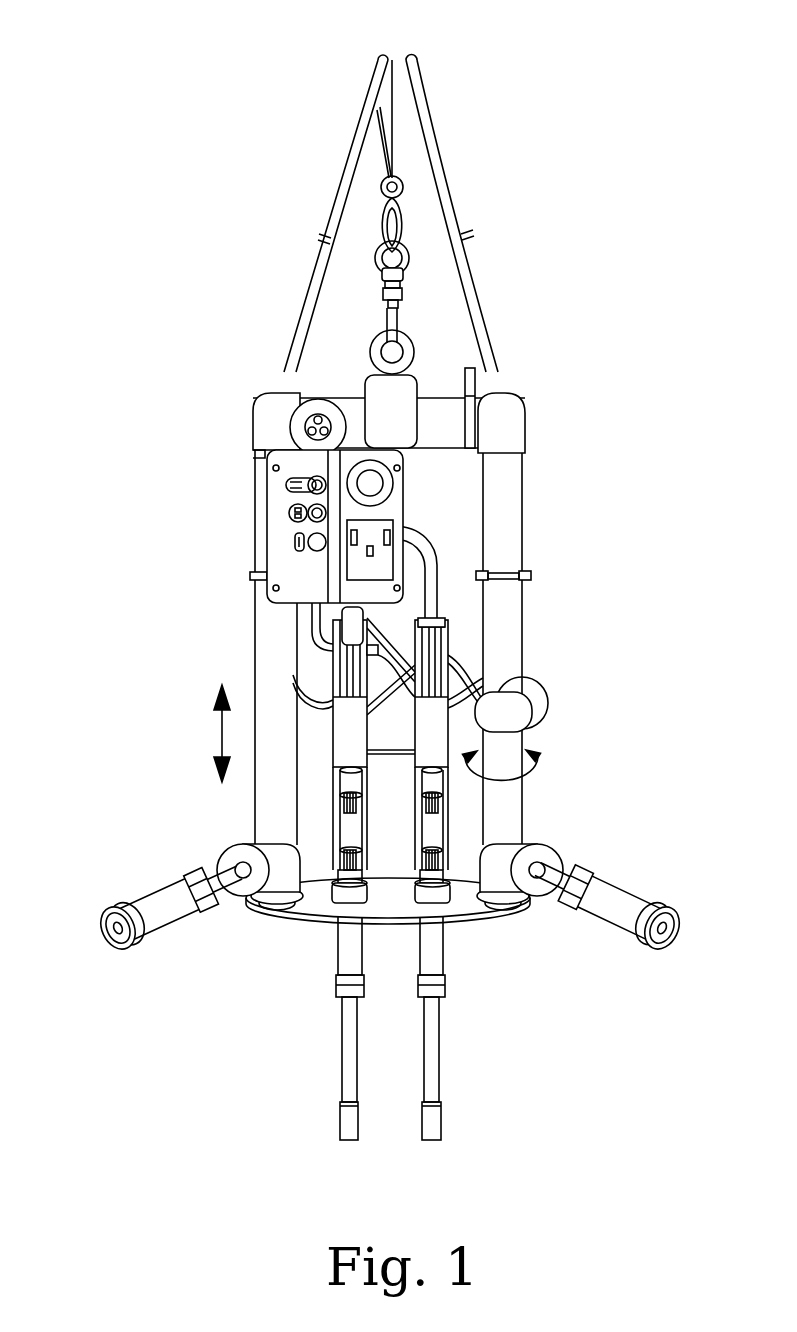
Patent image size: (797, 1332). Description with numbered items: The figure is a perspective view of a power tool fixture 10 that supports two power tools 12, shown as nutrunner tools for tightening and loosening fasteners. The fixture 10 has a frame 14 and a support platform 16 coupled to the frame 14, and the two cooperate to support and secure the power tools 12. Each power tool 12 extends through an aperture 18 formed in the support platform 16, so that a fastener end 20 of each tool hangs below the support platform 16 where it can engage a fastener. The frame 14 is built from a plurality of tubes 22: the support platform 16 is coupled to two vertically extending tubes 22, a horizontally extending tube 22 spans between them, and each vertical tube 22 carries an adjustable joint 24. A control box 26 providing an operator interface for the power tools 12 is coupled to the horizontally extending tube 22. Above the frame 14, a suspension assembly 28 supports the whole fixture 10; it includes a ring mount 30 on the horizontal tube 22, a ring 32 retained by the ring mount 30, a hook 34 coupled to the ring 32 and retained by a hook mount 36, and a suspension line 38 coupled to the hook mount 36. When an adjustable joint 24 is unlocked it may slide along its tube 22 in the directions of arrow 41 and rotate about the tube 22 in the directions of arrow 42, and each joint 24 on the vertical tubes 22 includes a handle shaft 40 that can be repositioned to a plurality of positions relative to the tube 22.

The power tool fixture 10 is at (358, 602).
The power tool 12 is at (468, 621).
The frame 14 is at (420, 586).
The support platform 16 is at (479, 918).
The aperture 18 is at (352, 903).
The fastener end 20 is at (435, 1143).
The tube 22 is at (497, 364).
The adjustable joint 24 is at (214, 851).
The control box 26 is at (222, 520).
The suspension assembly 28 is at (382, 215).
The ring mount 30 is at (442, 412).
The ring 32 is at (407, 336).
The hook 34 is at (382, 289).
The hook mount 36 is at (376, 258).
The suspension line 38 is at (396, 136).
The handle shaft 40 is at (94, 938).
The arrow 41 is at (220, 738).
The arrow 42 is at (548, 762).